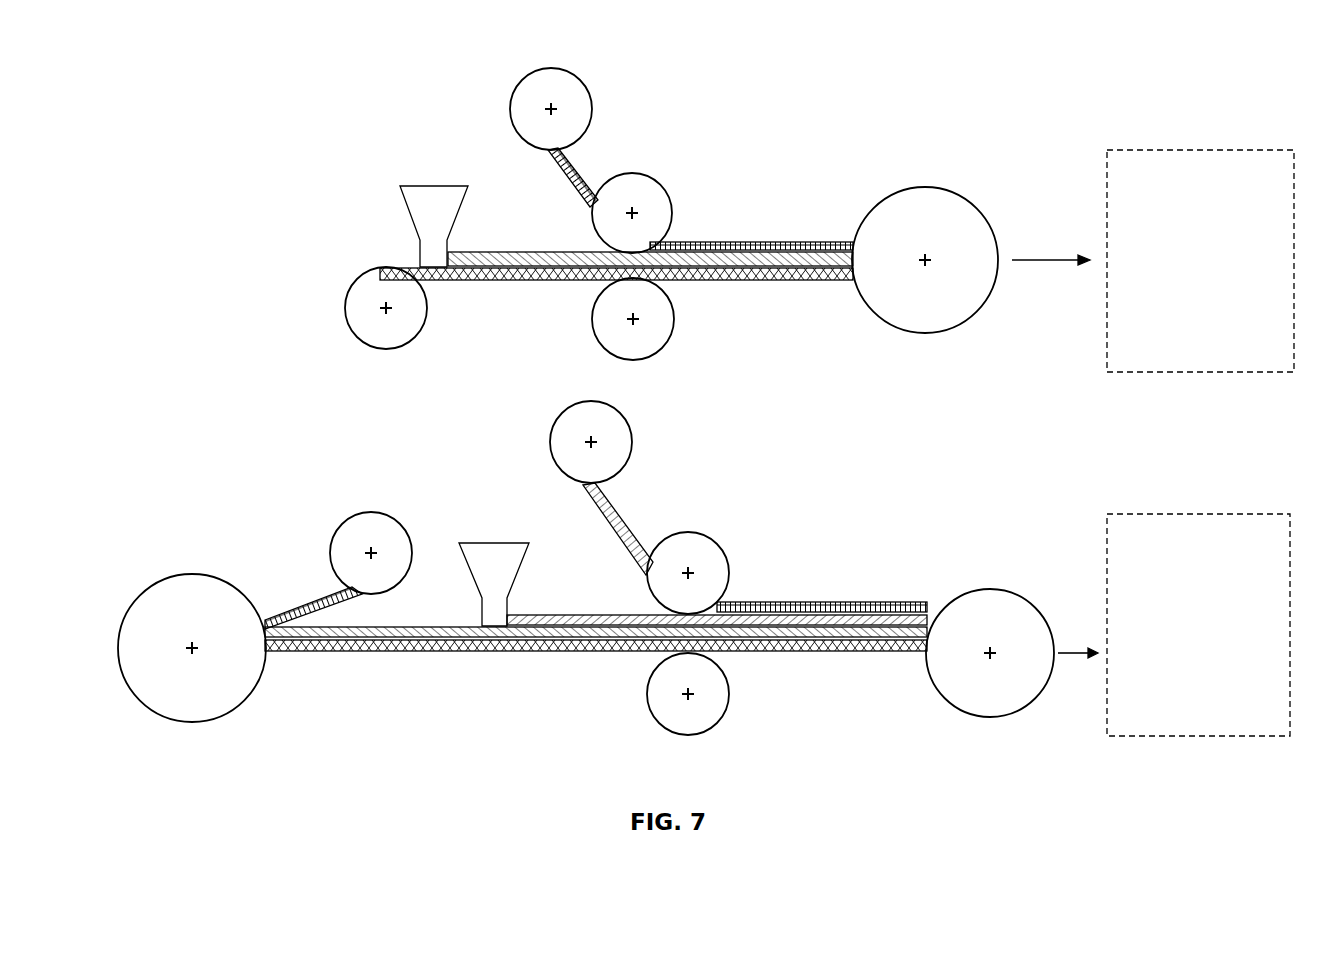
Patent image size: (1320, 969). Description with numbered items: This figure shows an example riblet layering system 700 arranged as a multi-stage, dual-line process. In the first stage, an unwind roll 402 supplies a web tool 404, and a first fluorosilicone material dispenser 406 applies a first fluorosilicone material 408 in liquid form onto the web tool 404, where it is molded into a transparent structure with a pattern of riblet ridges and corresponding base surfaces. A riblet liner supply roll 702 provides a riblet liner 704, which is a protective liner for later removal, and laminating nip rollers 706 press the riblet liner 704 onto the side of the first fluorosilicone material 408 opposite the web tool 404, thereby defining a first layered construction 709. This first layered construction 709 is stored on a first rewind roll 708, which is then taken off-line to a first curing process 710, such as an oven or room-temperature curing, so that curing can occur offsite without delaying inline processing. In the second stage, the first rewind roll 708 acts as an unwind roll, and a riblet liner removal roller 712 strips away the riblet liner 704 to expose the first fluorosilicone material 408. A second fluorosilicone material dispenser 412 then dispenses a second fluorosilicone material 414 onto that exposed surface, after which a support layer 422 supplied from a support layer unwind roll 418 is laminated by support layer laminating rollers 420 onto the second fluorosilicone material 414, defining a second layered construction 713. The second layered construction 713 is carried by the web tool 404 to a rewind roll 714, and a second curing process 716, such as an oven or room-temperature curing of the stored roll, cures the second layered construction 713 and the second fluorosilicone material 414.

The riblet layering system 700 is at (270, 56).
The riblet liner supply roll 702 is at (551, 68).
The riblet liner 704 is at (567, 173).
The laminating nip rollers 706 is at (632, 173).
The first rewind roll 708 is at (927, 188).
The first layered construction 709 is at (770, 302).
The first curing process 710 is at (1165, 150).
The unwind roll 402 is at (380, 268).
The web tool 404 is at (470, 282).
The first fluorosilicone material dispenser 406 is at (437, 186).
The first fluorosilicone material 408 is at (520, 263).
The second fluorosilicone material dispenser 412 is at (493, 560).
The second fluorosilicone material 414 is at (560, 617).
The support layer unwind roll 418 is at (590, 402).
The support layer laminating rollers 420 is at (688, 533).
The support layer 422 is at (595, 506).
The riblet liner removal roller 712 is at (371, 512).
The second layered construction 713 is at (848, 660).
The rewind roll 714 is at (993, 717).
The second curing process 716 is at (1165, 514).